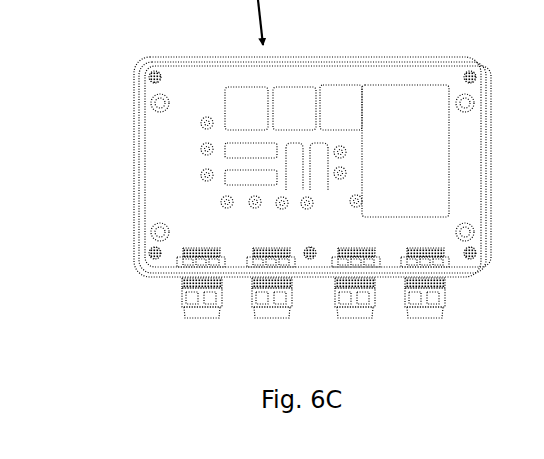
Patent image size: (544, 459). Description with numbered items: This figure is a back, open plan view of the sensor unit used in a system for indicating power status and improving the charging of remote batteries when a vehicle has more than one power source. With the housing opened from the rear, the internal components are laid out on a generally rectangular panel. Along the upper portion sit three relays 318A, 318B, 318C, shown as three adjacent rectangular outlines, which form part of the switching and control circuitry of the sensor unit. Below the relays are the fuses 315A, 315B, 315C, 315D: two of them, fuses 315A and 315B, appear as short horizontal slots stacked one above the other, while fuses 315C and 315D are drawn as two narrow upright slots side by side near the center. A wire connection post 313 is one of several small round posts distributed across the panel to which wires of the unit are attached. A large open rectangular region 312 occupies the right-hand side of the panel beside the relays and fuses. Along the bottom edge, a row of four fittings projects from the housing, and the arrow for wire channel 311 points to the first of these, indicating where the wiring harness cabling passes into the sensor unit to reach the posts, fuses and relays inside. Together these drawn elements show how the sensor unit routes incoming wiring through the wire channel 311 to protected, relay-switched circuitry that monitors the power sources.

The wire channel 311 is at (184, 307).
The cover panel 312 is at (415, 185).
The wire connection posts 313 is at (200, 125).
The fuse 315A is at (248, 151).
The fuse 315B is at (235, 182).
The fuse 315C is at (297, 183).
The fuse 315D is at (320, 183).
The relay 318A is at (240, 105).
The relay 318B is at (293, 105).
The relay 318C is at (350, 105).